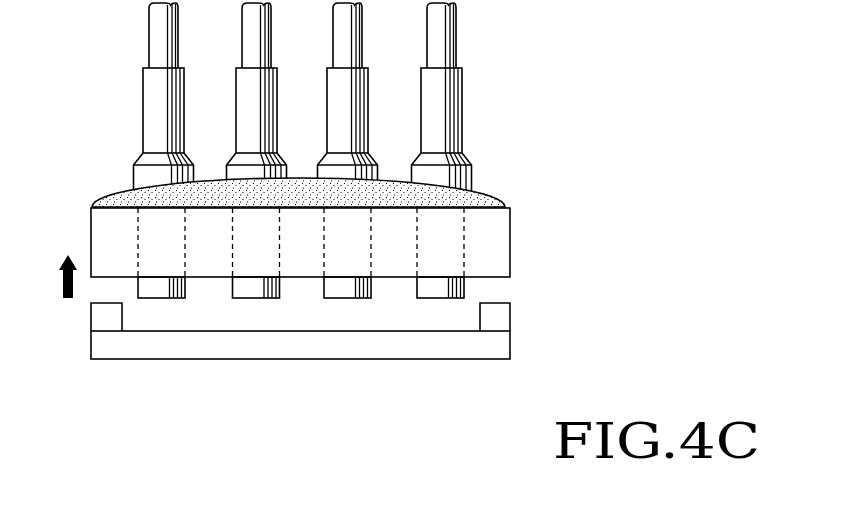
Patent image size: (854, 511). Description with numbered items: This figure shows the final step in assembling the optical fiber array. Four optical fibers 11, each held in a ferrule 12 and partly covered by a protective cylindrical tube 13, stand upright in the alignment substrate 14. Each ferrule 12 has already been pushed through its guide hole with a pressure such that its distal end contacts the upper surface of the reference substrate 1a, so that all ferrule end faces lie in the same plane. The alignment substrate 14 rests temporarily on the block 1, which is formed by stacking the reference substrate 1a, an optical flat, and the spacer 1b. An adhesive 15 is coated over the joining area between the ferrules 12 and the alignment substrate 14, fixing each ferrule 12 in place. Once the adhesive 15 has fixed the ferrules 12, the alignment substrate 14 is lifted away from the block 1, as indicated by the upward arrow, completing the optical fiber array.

The optical fiber 11 is at (456, 45).
The ferrule 12 is at (436, 299).
The cylindrical tube 13 is at (472, 180).
The alignment substrate 14 is at (503, 240).
The adhesive 15 is at (497, 202).
The block 1 is at (310, 355).
The reference substrate 1a is at (510, 345).
The spacer 1b is at (507, 313).